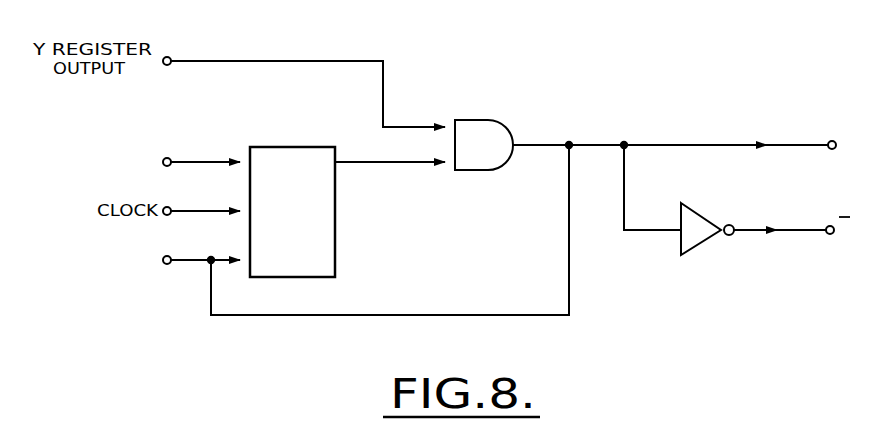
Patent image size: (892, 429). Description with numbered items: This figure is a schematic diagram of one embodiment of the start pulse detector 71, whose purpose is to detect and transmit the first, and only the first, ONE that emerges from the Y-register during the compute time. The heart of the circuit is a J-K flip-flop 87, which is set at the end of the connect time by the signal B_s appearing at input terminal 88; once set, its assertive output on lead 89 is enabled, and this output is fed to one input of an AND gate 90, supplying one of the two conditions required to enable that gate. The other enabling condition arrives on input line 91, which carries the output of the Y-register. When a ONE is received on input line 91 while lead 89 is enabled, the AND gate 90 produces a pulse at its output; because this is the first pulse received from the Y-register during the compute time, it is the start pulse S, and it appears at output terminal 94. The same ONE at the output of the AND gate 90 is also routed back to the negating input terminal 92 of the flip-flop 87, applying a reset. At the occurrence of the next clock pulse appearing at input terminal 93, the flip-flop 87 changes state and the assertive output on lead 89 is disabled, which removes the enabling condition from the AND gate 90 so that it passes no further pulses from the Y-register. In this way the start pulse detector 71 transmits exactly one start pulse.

The start pulse detector 71 is at (640, 82).
The J-K flip-flop 87 is at (289, 146).
The input terminal 88 is at (169, 157).
The lead 89 is at (418, 165).
The AND gate 90 is at (504, 120).
The input line 91 is at (231, 59).
The negating input terminal 92 is at (167, 265).
The input terminal 93 is at (170, 207).
The output terminal 94 is at (831, 140).